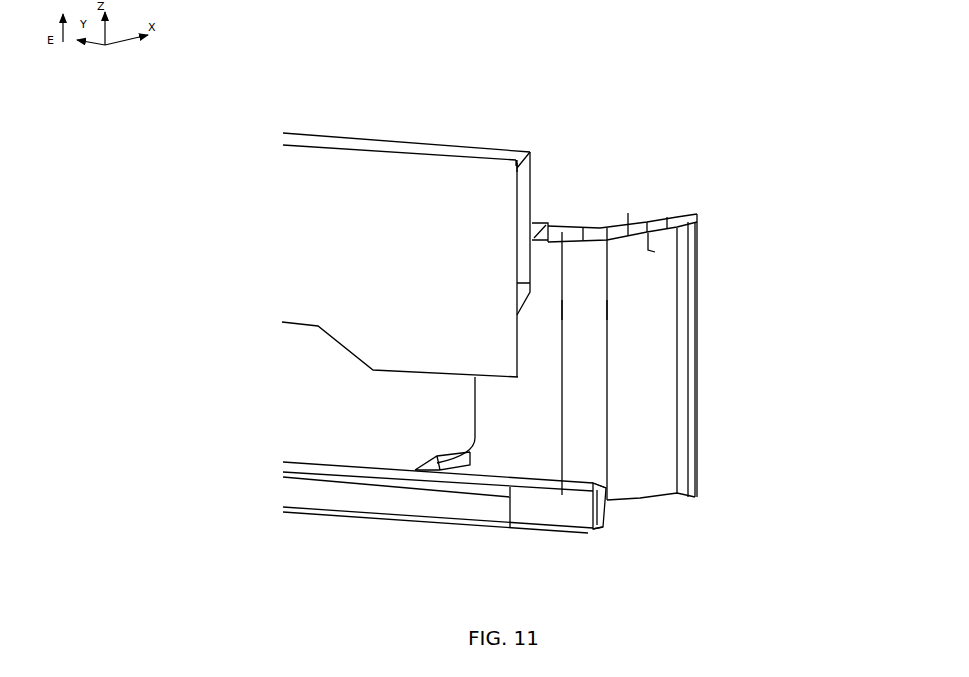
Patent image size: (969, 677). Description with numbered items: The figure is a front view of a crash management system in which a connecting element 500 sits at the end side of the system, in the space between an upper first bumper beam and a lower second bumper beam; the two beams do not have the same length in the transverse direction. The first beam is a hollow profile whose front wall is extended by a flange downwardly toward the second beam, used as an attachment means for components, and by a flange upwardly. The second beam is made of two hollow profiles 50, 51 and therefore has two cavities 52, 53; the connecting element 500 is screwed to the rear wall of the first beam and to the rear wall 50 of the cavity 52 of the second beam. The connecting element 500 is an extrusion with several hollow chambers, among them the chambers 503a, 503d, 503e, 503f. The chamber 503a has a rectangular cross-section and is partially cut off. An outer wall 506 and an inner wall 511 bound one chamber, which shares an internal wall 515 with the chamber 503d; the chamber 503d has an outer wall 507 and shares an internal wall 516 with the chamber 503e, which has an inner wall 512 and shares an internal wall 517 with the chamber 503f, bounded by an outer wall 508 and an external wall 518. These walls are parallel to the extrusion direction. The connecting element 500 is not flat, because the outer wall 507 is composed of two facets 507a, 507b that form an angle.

The hollow profile 50 is at (614, 512).
The hollow profile 51 is at (358, 499).
The cavity 52 is at (611, 503).
The cavity 53 is at (605, 515).
The connecting element 500 is at (709, 423).
The hollow chamber 503a is at (437, 462).
The hollow chamber 503d is at (562, 229).
The hollow chamber 503e is at (607, 229).
The hollow chamber 503f is at (668, 217).
The outer wall 506 is at (583, 252).
The outer wall 507 is at (562, 236).
The facet 507a is at (565, 298).
The facet 507b is at (565, 298).
The outer wall 508 is at (657, 271).
The inner wall 511 is at (538, 223).
The inner wall 512 is at (629, 213).
The internal wall 515 is at (547, 231).
The internal wall 516 is at (583, 227).
The internal wall 517 is at (648, 237).
The external wall 518 is at (698, 222).